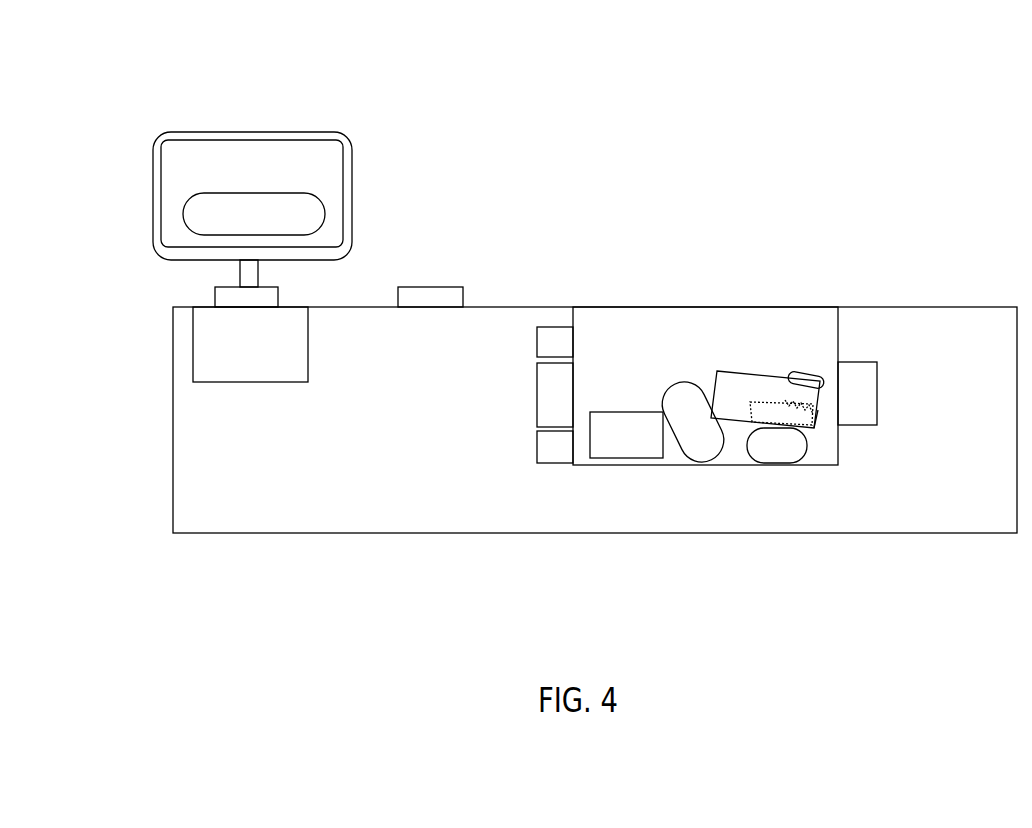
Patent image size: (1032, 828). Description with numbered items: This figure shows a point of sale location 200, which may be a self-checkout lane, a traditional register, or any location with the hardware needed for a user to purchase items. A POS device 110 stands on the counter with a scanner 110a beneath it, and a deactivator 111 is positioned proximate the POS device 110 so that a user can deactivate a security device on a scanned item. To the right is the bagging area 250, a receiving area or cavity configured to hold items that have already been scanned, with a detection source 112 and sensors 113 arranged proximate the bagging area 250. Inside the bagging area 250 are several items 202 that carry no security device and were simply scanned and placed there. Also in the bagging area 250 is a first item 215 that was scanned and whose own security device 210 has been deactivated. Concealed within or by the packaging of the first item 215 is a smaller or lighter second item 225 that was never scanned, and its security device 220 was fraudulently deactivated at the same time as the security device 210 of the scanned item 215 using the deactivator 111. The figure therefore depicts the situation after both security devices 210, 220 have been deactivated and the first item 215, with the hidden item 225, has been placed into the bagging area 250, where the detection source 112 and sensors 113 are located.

The point of sale location 200 is at (815, 93).
The POS device 110 is at (192, 152).
The scanner 110a is at (205, 350).
The deactivator 111 is at (429, 298).
The detection source 112 is at (544, 395).
The sensor 113 is at (552, 341).
The bagging area 250 is at (707, 350).
The item 215 is at (723, 382).
The security device 220 is at (790, 403).
The security device 210 is at (822, 376).
The second item 225 is at (814, 428).
The item 202 is at (625, 448).